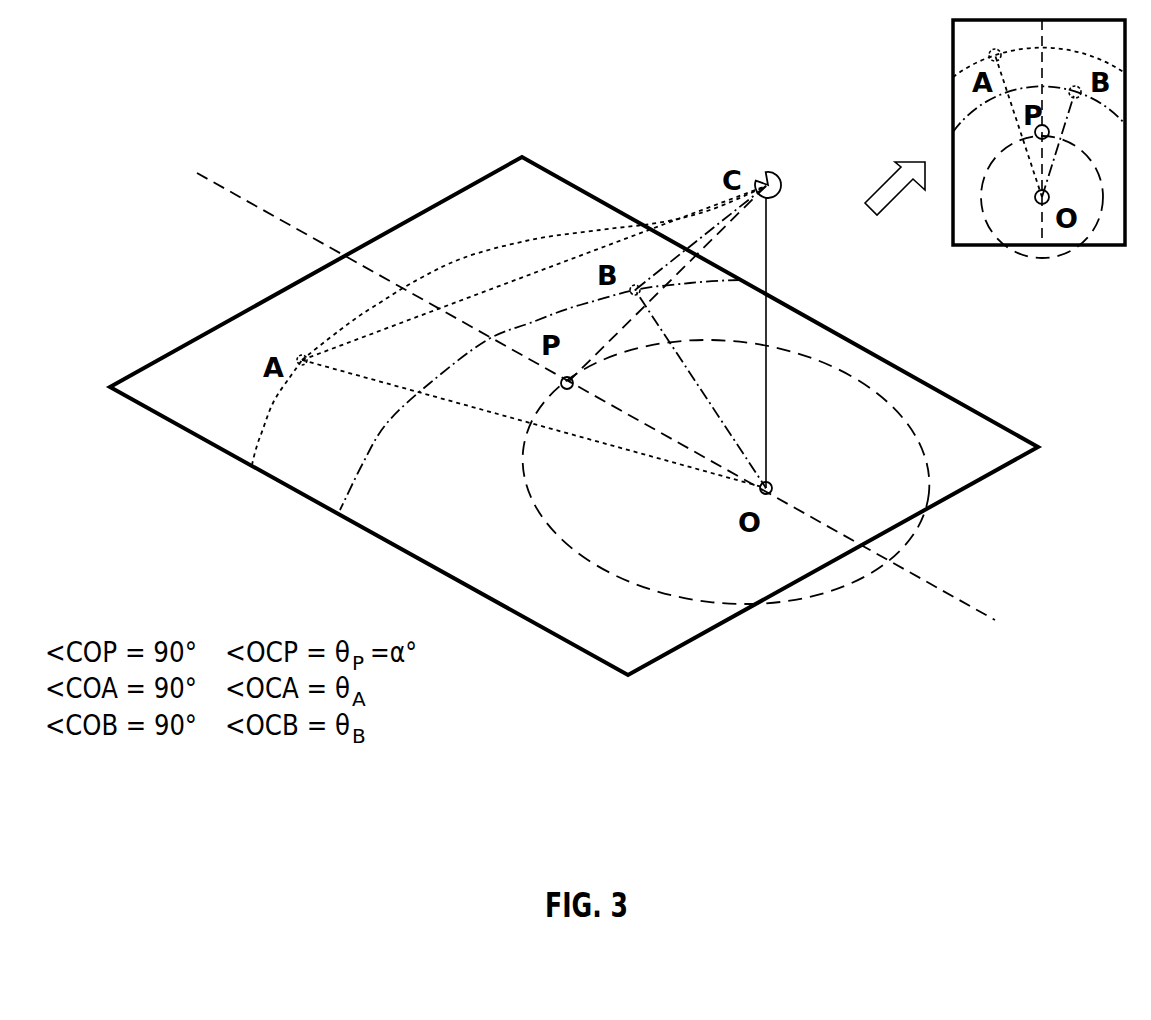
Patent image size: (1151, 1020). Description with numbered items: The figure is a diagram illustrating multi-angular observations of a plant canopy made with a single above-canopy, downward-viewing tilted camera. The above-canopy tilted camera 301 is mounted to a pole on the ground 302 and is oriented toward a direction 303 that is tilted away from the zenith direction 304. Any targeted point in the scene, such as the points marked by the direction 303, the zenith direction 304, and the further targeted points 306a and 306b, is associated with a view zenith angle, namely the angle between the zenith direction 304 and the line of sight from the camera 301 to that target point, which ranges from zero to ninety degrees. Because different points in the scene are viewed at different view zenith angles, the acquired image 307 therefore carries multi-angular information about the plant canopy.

The above-canopy tilted camera 301 is at (758, 174).
The ground 302 is at (990, 480).
The direction 303 is at (559, 387).
The zenith direction 304 is at (771, 482).
The targeted point 306a is at (303, 353).
The targeted point 306b is at (633, 284).
The acquired image 307 is at (1040, 250).